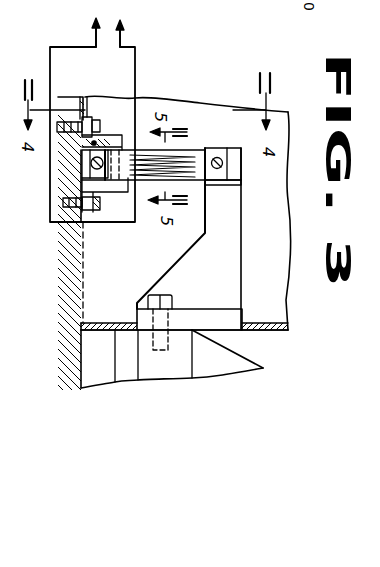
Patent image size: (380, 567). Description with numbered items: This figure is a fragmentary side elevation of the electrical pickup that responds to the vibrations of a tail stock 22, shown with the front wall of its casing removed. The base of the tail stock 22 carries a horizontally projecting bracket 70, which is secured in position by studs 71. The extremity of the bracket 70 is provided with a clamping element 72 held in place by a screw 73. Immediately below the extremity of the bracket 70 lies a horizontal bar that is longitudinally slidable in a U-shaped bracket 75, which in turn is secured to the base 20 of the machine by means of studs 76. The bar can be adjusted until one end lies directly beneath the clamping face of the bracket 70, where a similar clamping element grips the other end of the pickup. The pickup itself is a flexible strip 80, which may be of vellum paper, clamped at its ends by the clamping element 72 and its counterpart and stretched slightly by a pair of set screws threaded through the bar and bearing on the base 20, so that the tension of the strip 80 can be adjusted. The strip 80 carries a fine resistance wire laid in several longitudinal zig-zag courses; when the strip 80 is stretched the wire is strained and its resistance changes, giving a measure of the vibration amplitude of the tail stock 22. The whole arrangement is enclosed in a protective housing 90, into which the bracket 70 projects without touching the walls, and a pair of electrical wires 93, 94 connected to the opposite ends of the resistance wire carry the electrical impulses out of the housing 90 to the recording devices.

The base 20 is at (86, 274).
The tail stock 22 is at (165, 375).
The bracket 70 is at (238, 245).
The studs 71 is at (161, 246).
The clamping element 72 is at (227, 148).
The screw 73 is at (217, 156).
The U-shaped bracket 75 is at (113, 187).
The studs 76 is at (108, 123).
The flexible strip 80 is at (203, 150).
The housing 90 is at (262, 360).
The electrical wire 93 is at (123, 32).
The electrical wire 94 is at (95, 31).